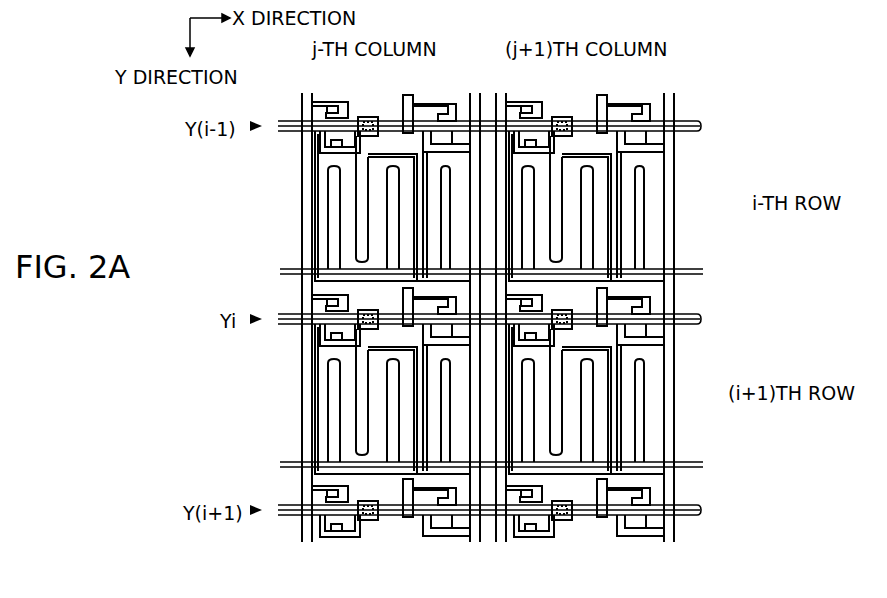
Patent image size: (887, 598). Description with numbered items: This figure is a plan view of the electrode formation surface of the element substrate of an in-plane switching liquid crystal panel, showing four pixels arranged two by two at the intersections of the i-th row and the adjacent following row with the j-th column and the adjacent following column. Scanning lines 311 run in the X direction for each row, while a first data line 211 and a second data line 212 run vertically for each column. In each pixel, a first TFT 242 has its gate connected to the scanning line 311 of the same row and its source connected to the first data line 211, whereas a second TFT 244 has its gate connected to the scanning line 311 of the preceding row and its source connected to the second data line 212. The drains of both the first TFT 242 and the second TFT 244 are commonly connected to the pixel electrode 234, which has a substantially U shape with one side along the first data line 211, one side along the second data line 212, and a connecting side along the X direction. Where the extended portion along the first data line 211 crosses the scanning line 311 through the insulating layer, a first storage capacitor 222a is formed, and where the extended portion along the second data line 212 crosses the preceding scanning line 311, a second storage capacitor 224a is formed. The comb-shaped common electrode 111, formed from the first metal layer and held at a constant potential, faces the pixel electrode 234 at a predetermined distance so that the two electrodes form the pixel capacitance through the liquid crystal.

The common electrode 111 is at (703, 271).
The first data line 211 is at (474, 95).
The second data line 212 is at (303, 200).
The scanning line 311 is at (700, 131).
The pixel electrode 234 is at (360, 158).
The second TFT 244 is at (328, 90).
The second storage capacitor 224a is at (371, 115).
The first storage capacitor 222a is at (404, 300).
The first TFT 242 is at (442, 282).